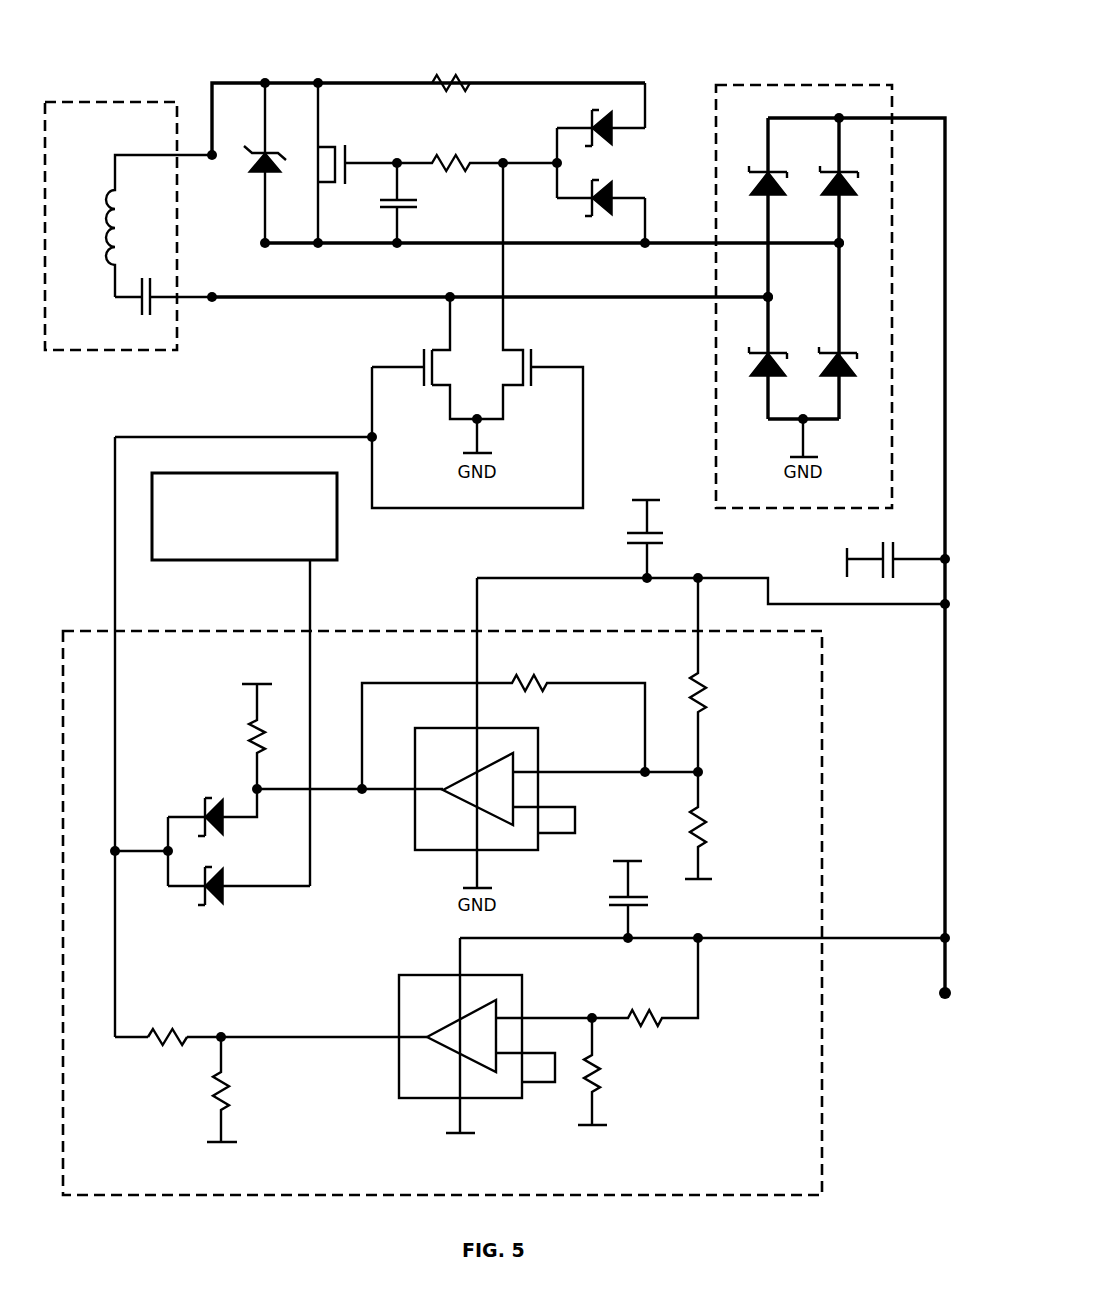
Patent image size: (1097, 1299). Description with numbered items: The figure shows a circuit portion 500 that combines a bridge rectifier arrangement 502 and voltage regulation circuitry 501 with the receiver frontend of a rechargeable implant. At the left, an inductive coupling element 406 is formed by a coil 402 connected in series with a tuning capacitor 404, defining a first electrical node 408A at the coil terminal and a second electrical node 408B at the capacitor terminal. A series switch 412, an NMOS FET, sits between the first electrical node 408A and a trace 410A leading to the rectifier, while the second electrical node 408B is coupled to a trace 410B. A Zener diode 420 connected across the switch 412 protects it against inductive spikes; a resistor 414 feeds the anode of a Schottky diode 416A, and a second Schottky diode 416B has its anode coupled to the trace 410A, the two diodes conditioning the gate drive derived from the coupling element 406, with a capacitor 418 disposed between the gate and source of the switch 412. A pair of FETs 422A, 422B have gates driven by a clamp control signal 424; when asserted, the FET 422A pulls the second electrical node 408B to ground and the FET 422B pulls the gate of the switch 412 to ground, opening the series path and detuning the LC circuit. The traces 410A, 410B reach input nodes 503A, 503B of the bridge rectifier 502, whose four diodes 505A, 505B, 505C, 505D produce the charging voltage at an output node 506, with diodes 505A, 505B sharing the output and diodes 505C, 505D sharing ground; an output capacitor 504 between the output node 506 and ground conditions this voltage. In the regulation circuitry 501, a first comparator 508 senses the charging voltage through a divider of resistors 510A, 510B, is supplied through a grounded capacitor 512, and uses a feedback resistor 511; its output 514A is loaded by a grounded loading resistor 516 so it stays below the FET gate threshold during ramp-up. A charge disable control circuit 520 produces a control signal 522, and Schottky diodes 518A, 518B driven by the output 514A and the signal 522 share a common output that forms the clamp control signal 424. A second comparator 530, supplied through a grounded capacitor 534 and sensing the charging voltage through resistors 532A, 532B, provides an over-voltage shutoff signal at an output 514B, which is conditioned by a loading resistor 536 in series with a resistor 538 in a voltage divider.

The circuit portion 500 is at (795, 37).
The coil 402 is at (108, 193).
The tuning capacitor 404 is at (142, 308).
The inductive coupling element 406 is at (138, 352).
The first electrical node 408A is at (210, 151).
The second electrical node 408B is at (215, 300).
The trace 410A is at (678, 248).
The trace 410B is at (617, 301).
The series switch 412 is at (333, 146).
The resistor 414 is at (464, 82).
The Schottky diode 416A is at (613, 133).
The Schottky diode 416B is at (616, 192).
The capacitor 418 is at (410, 208).
The Zener diode 420 is at (262, 179).
The FET 422A is at (422, 353).
The FET 422B is at (535, 353).
The clamp control signal 424 is at (277, 437).
The voltage regulation circuitry 501 is at (442, 913).
The bridge rectifier arrangement 502 is at (775, 85).
The input node 503A is at (841, 243).
The input node 503B is at (770, 299).
The output capacitor 504 is at (882, 553).
The diode 505A is at (766, 171).
The diode 505B is at (841, 171).
The diode 505C is at (755, 370).
The diode 505D is at (825, 370).
The output node 506 is at (942, 991).
The first comparator 508 is at (455, 852).
The resistor 510A is at (700, 738).
The resistor 510B is at (700, 838).
The feedback resistor 511 is at (532, 688).
The grounded capacitor 512 is at (630, 545).
The output of first comparator 514A is at (364, 787).
The output of second comparator 514B is at (226, 1043).
The grounded loading resistor 516 is at (250, 743).
The Schottky diode 518A is at (218, 810).
The Schottky diode 518B is at (226, 901).
The charge disable control circuit 520 is at (244, 516).
The charge disable control signal 522 is at (308, 566).
The second comparator 530 is at (437, 1101).
The resistor 532A is at (643, 1021).
The resistor 532B is at (596, 1078).
The grounded capacitor 534 is at (616, 897).
The grounded loading resistor 536 is at (213, 1085).
The resistor 538 is at (185, 1028).